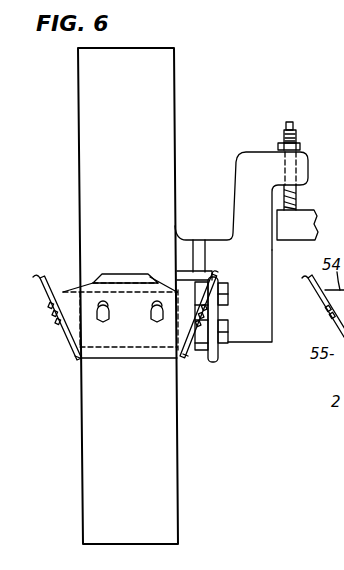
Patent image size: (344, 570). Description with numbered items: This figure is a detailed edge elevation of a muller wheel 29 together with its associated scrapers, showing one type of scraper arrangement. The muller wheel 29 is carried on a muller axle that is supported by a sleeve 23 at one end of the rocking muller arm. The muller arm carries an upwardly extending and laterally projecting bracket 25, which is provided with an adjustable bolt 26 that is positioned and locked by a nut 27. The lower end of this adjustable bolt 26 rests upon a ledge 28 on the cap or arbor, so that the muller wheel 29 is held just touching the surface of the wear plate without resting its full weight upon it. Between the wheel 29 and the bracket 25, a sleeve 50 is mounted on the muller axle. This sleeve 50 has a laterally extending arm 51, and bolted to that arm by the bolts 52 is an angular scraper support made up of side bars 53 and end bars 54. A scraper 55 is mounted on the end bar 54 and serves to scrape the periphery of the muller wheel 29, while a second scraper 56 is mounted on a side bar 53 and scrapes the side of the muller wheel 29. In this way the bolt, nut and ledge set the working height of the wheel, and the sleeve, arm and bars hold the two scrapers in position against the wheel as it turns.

The muller wheel 29 is at (163, 104).
The bracket 25 is at (233, 187).
The sleeve 23 is at (257, 342).
The adjustable bolt 26 is at (296, 133).
The nut 27 is at (300, 147).
The ledge 28 is at (292, 234).
The sleeve 50 is at (201, 248).
The laterally extending arm 51 is at (220, 358).
The bolts 52 is at (229, 322).
The scraper 55 is at (136, 353).
The side bars 53 is at (63, 290).
The end bars 54 is at (165, 288).
The scraper 56 is at (68, 343).